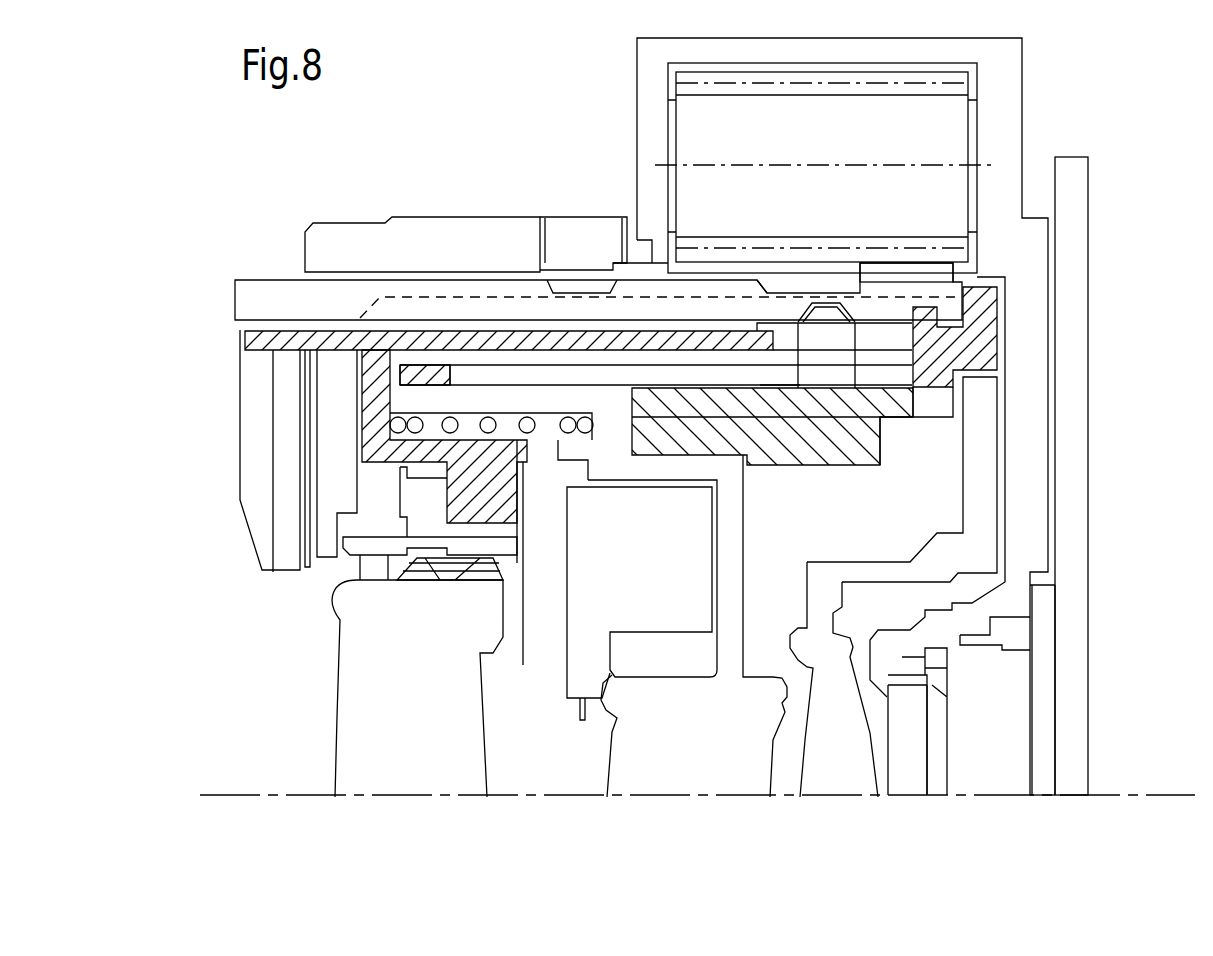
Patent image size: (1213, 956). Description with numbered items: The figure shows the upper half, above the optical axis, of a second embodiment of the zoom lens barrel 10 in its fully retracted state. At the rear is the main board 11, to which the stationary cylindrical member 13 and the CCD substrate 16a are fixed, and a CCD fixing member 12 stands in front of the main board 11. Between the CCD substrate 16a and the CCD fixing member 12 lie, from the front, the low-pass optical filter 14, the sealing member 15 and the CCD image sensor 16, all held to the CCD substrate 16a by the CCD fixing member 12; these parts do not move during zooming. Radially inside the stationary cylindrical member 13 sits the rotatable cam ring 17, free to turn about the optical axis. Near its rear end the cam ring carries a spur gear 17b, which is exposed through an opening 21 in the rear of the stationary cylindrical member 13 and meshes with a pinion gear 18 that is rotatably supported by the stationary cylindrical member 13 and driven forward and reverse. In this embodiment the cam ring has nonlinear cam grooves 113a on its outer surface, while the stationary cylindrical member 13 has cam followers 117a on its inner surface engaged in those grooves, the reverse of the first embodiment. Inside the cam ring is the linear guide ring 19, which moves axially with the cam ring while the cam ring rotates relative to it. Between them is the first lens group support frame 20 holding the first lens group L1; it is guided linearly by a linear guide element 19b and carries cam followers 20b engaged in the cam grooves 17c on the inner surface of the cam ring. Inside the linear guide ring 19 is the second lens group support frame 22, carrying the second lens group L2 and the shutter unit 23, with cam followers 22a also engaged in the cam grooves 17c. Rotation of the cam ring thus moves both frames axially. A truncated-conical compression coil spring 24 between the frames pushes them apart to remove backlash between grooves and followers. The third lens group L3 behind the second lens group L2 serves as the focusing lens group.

The zoom lens barrel 10 is at (236, 660).
The main board 11 is at (1063, 506).
The CCD fixing member 12 is at (1030, 430).
The stationary cylindrical member 13 is at (330, 240).
The low-pass optical filter 14 is at (908, 790).
The sealing member 15 is at (935, 683).
The CCD image sensor 16 is at (996, 790).
The CCD substrate 16a is at (1040, 790).
The rotatable cam ring 17 is at (270, 290).
The spur gear 17b is at (912, 265).
The cam grooves 17c is at (483, 300).
The pinion gear 18 is at (957, 120).
The linear guide ring 19 is at (945, 398).
The linear guide element 19b is at (778, 378).
The first lens group support frame 20 is at (310, 340).
The cam followers 20b is at (800, 300).
The opening 21 is at (655, 245).
The second lens group support frame 22 is at (765, 445).
The cam followers 22a is at (883, 372).
The shutter unit 23 is at (582, 677).
The compression coil spring 24 is at (392, 425).
The nonlinear cam grooves 113a is at (750, 290).
The cam followers 117a is at (560, 265).
The first lens group L1 is at (392, 783).
The second lens group L2 is at (685, 775).
The third lens group L3 is at (832, 788).